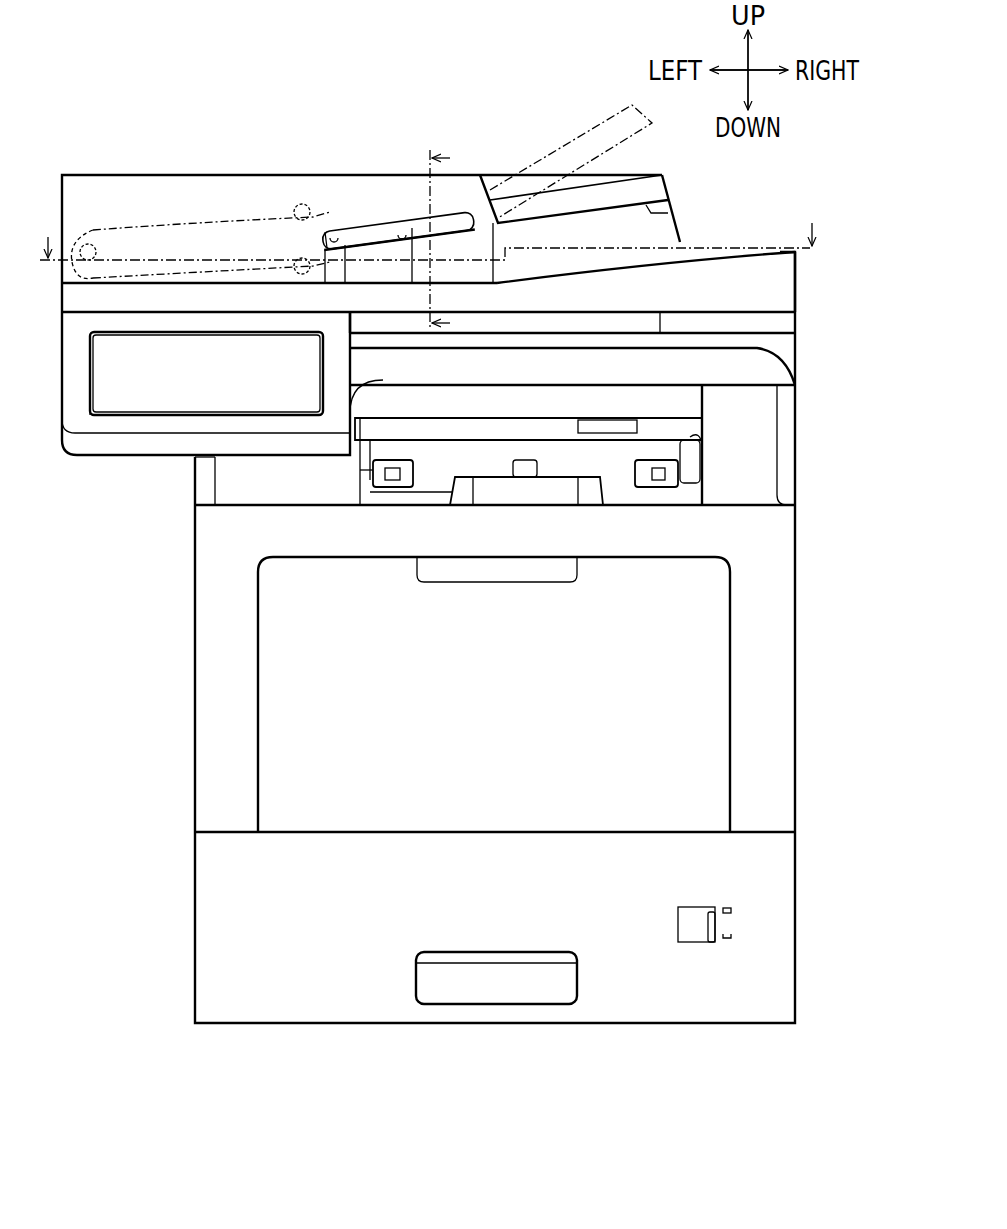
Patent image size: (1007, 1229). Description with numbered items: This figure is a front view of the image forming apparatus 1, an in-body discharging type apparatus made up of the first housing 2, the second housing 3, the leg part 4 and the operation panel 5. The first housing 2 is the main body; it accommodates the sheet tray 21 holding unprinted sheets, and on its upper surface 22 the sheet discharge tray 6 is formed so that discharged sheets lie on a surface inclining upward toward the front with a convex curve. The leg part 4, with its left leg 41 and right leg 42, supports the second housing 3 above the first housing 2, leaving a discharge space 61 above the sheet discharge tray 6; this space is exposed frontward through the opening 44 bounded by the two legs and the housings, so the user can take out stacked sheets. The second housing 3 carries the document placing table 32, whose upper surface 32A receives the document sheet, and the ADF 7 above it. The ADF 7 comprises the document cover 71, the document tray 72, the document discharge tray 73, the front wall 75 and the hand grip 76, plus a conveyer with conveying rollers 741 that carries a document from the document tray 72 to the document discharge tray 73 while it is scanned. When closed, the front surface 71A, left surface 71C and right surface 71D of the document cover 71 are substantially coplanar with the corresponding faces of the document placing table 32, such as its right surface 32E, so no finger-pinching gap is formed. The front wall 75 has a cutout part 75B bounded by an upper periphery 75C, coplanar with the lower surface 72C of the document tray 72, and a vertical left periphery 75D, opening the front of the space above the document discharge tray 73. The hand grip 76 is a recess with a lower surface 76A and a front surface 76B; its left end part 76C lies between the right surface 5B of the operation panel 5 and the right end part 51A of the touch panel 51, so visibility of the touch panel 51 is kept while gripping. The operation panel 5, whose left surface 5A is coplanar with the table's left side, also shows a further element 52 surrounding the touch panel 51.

The image forming apparatus 1 is at (105, 108).
The first housing 2 is at (182, 653).
The second housing 3 is at (85, 172).
The leg part 4 is at (800, 443).
The operation panel 5 is at (147, 462).
The left surface of operation panel 5A is at (60, 410).
The right surface of operation panel 5B is at (370, 410).
The sheet discharge tray 6 is at (612, 500).
The auto document feeder (ADF) 7 is at (163, 172).
The sheet tray 21 is at (310, 1022).
The upper surface of first housing 22 is at (278, 505).
The document placing table 32 is at (795, 348).
The upper surface of document placing table 32A is at (785, 312).
The right surface of document placing table 32E is at (795, 325).
The left leg 41 is at (215, 488).
The right leg 42 is at (755, 460).
The opening 44 is at (705, 437).
The touch panel 51 is at (115, 395).
The right end part of touch panel 51A is at (322, 362).
The operation keys 52 is at (135, 425).
The discharge space 61 is at (445, 477).
The document cover 71 is at (727, 300).
The front surface of document cover 71A is at (673, 300).
The left surface of document cover 71C is at (90, 345).
The right surface of document cover 71D is at (795, 262).
The document tray 72 is at (633, 176).
The lower surface of document tray 72C is at (657, 213).
The document discharge tray 73 is at (580, 268).
The front wall 75 is at (232, 172).
The cutout part 75B is at (505, 243).
The upper periphery 75C is at (412, 226).
The left periphery 75D is at (330, 270).
The hand grip 76 is at (365, 222).
The lower surface of hand grip 76A is at (340, 222).
The front surface of hand grip 76B is at (448, 232).
The left end part of hand grip 76C is at (332, 218).
The conveying rollers 741 is at (300, 210).